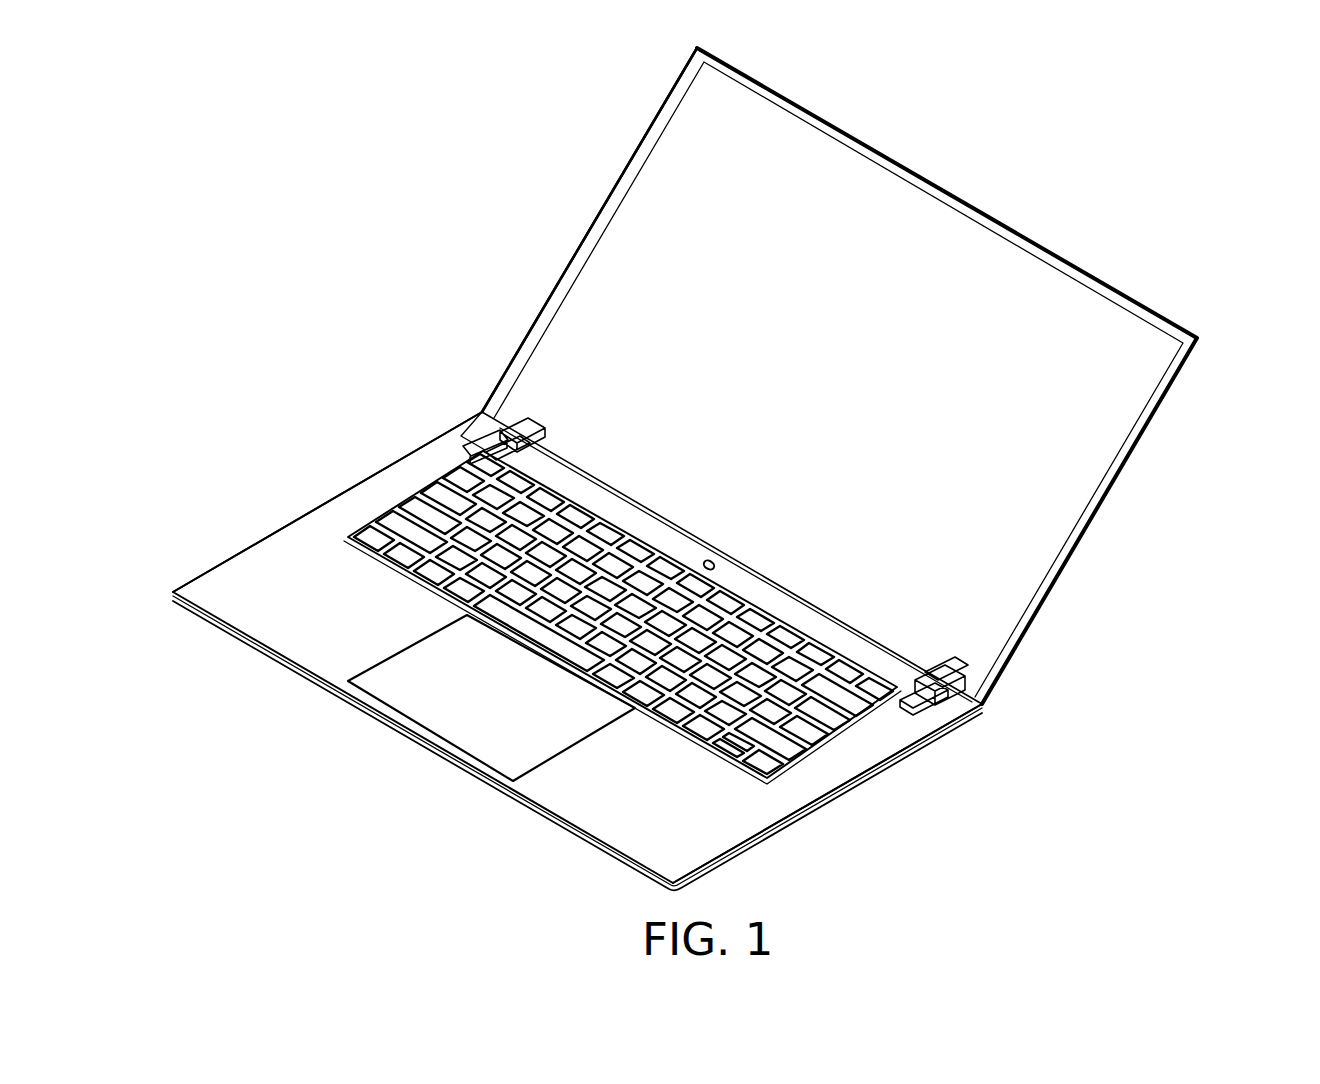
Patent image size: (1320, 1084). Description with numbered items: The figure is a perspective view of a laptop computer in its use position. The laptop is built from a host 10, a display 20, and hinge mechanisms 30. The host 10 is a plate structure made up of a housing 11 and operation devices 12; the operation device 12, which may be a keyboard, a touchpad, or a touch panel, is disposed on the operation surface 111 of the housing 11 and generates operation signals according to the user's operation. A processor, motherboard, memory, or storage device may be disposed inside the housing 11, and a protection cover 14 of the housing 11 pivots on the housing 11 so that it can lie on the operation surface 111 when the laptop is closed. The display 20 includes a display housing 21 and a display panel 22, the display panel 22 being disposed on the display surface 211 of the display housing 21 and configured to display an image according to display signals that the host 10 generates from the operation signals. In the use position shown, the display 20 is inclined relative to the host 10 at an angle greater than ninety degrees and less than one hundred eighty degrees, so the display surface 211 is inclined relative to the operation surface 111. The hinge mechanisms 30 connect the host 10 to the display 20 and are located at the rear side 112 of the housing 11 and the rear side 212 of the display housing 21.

The host 10 is at (622, 634).
The housing 11 is at (350, 478).
The operation surface 111 is at (277, 551).
The rear side 112 is at (978, 717).
The operation device 12 is at (490, 598).
The protection cover 14 is at (478, 423).
The display 20 is at (858, 383).
The display housing 21 is at (1046, 242).
The display surface 211 is at (640, 150).
The rear side 212 is at (1080, 717).
The display panel 22 is at (628, 233).
The hinge mechanism 30 is at (533, 426).